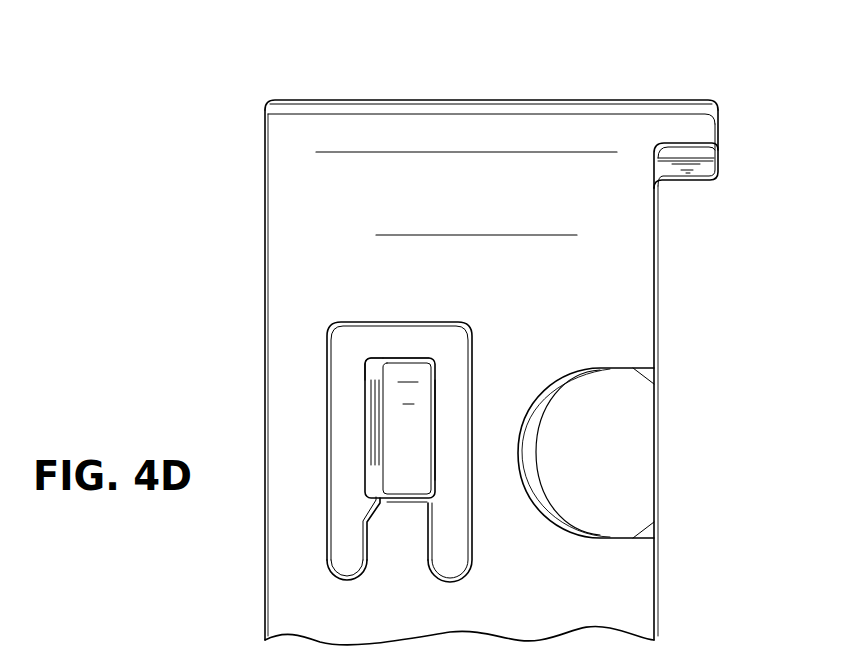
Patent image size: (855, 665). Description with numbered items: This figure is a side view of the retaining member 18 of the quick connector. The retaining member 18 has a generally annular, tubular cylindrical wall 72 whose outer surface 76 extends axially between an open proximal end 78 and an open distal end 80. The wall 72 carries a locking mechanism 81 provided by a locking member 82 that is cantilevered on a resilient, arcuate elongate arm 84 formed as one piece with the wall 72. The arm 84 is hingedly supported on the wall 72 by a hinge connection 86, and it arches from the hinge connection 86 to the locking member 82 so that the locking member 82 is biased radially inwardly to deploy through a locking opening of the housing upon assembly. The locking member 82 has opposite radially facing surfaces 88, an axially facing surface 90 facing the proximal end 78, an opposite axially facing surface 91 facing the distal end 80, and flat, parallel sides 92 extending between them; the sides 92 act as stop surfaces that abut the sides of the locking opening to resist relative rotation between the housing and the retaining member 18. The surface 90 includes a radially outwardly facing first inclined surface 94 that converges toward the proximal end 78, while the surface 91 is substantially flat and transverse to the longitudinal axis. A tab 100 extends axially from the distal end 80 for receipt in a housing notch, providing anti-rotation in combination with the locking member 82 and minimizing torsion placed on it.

The retaining member 18 is at (699, 81).
The cylindrical wall 72 is at (312, 99).
The outer surface 76 is at (586, 146).
The proximal end 78 is at (265, 242).
The distal end 80 is at (656, 243).
The locking mechanism 81 is at (487, 563).
The locking member 82 is at (366, 362).
The elongate arm 84 is at (380, 548).
The hinge connection 86 is at (400, 571).
The radially facing surface 88 is at (403, 437).
The axially facing surface 90 is at (366, 427).
The axially facing surface 91 is at (436, 413).
The side 92 is at (405, 355).
The first inclined surface 94 is at (362, 386).
The tab 100 is at (720, 136).